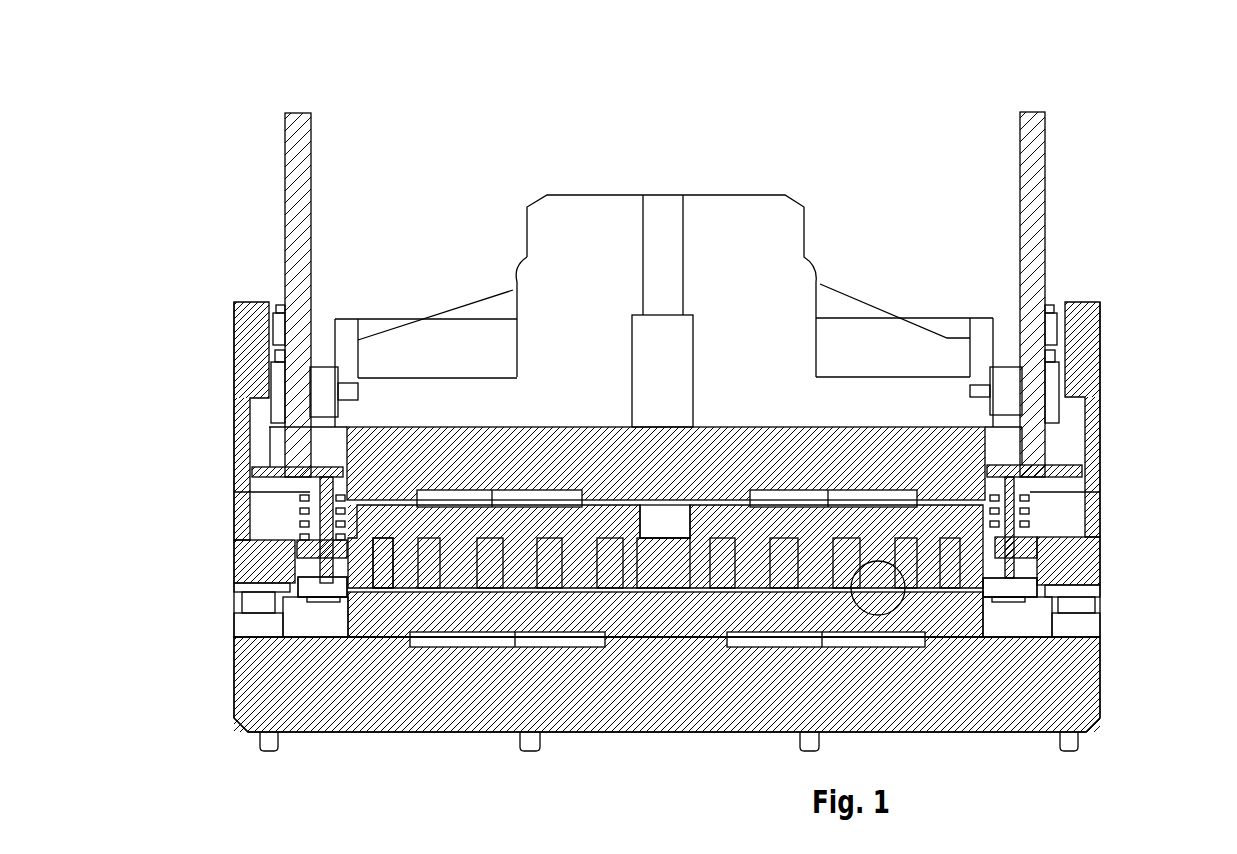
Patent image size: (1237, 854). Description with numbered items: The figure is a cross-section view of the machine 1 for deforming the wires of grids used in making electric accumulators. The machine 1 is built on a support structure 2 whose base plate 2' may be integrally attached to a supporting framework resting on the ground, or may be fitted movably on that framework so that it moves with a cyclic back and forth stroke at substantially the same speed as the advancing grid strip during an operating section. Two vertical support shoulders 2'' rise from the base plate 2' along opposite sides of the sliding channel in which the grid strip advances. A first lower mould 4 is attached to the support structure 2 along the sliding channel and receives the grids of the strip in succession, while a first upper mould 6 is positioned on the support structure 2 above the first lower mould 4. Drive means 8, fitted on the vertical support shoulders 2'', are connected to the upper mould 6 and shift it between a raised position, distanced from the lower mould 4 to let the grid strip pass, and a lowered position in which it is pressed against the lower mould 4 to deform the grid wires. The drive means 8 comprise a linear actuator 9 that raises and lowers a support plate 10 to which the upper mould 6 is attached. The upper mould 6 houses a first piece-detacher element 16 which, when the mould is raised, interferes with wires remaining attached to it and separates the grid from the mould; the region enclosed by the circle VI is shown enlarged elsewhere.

The machine 1 is at (1120, 157).
The support structure 2 is at (613, 526).
The base plate 2' is at (667, 727).
The vertical support shoulders 2'' is at (683, 420).
The first lower mould 4 is at (500, 608).
The first upper mould 6 is at (520, 540).
The drive means 8 is at (792, 186).
The linear actuator 9 is at (678, 335).
The support plate 10 is at (848, 437).
The first piece-detacher element 16 is at (384, 576).
The detail region VI is at (903, 608).